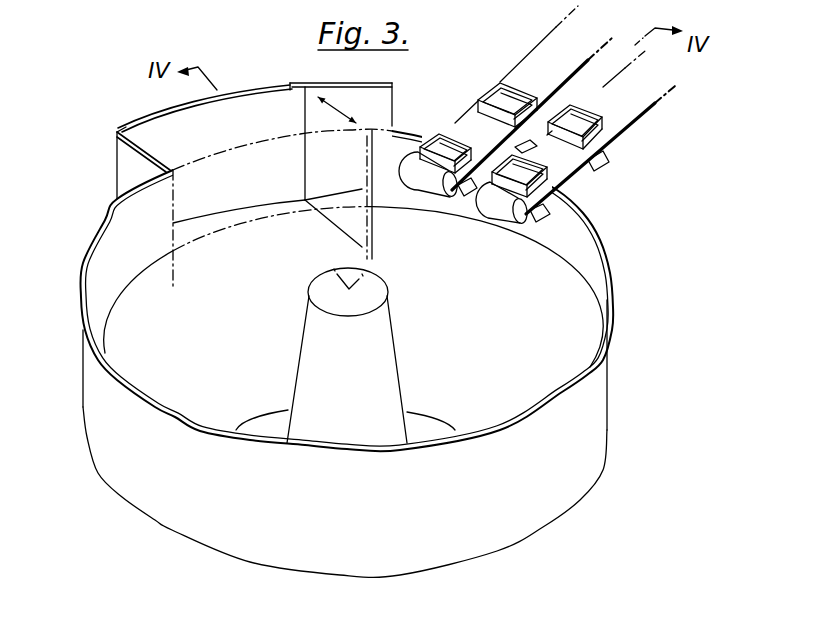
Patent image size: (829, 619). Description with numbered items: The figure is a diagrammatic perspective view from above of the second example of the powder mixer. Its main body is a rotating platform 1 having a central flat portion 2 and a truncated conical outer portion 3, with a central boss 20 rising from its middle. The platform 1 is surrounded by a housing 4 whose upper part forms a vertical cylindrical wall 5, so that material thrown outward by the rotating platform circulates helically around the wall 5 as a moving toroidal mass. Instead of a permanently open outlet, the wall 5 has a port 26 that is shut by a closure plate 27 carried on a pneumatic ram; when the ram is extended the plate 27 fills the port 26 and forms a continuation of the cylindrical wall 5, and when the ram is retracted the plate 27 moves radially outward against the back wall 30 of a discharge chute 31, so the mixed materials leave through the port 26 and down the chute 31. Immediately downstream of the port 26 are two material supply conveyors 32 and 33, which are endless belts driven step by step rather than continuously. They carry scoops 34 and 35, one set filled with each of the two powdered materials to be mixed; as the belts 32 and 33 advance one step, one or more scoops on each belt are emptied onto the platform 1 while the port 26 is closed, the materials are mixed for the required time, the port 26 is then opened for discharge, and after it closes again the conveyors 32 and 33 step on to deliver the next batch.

The platform 1 is at (354, 316).
The central flat portion 2 is at (435, 409).
The truncated conical outer portion 3 is at (485, 324).
The housing 4 is at (662, 364).
The vertical cylindrical wall 5 is at (117, 380).
The central boss 20 is at (311, 351).
The port 26 is at (175, 262).
The closure plate 27 is at (268, 135).
The back wall 30 is at (242, 98).
The discharge chute 31 is at (395, 97).
The material supply conveyor 32 is at (526, 84).
The material supply conveyor 33 is at (622, 121).
The scoop 34 is at (447, 137).
The scoop 35 is at (581, 127).